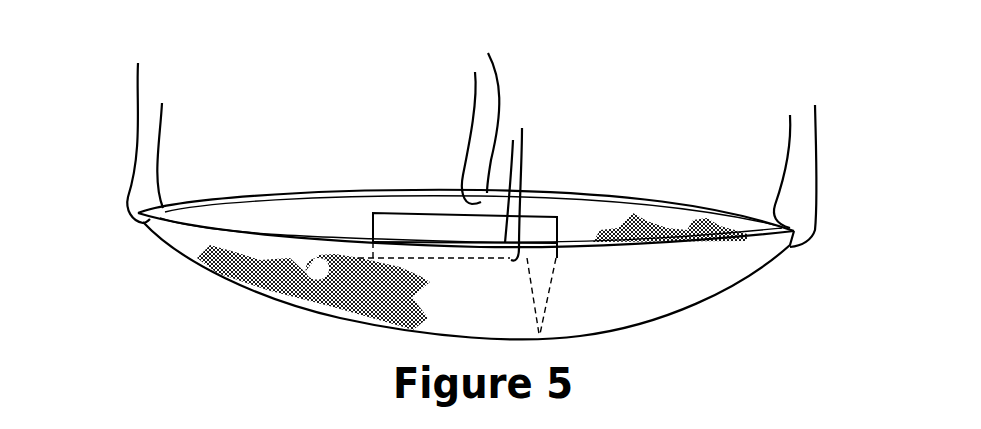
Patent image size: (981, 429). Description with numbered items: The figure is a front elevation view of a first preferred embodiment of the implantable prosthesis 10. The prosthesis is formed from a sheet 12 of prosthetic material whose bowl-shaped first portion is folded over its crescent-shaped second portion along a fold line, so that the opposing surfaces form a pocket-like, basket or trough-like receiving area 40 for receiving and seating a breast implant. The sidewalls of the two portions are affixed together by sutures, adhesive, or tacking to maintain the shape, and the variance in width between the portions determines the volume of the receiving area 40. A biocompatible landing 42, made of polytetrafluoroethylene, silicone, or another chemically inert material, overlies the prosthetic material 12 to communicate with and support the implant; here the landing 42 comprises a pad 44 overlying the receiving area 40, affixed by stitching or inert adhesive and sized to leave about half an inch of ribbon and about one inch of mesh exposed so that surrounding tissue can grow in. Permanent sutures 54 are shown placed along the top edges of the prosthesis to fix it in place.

The implantable prosthesis 10 is at (593, 194).
The sheet of prosthetic material 12 is at (717, 297).
The receiving area 40 is at (316, 190).
The biocompatible landing 42 is at (548, 213).
The pad 44 is at (398, 213).
The sutures 54 is at (133, 83).